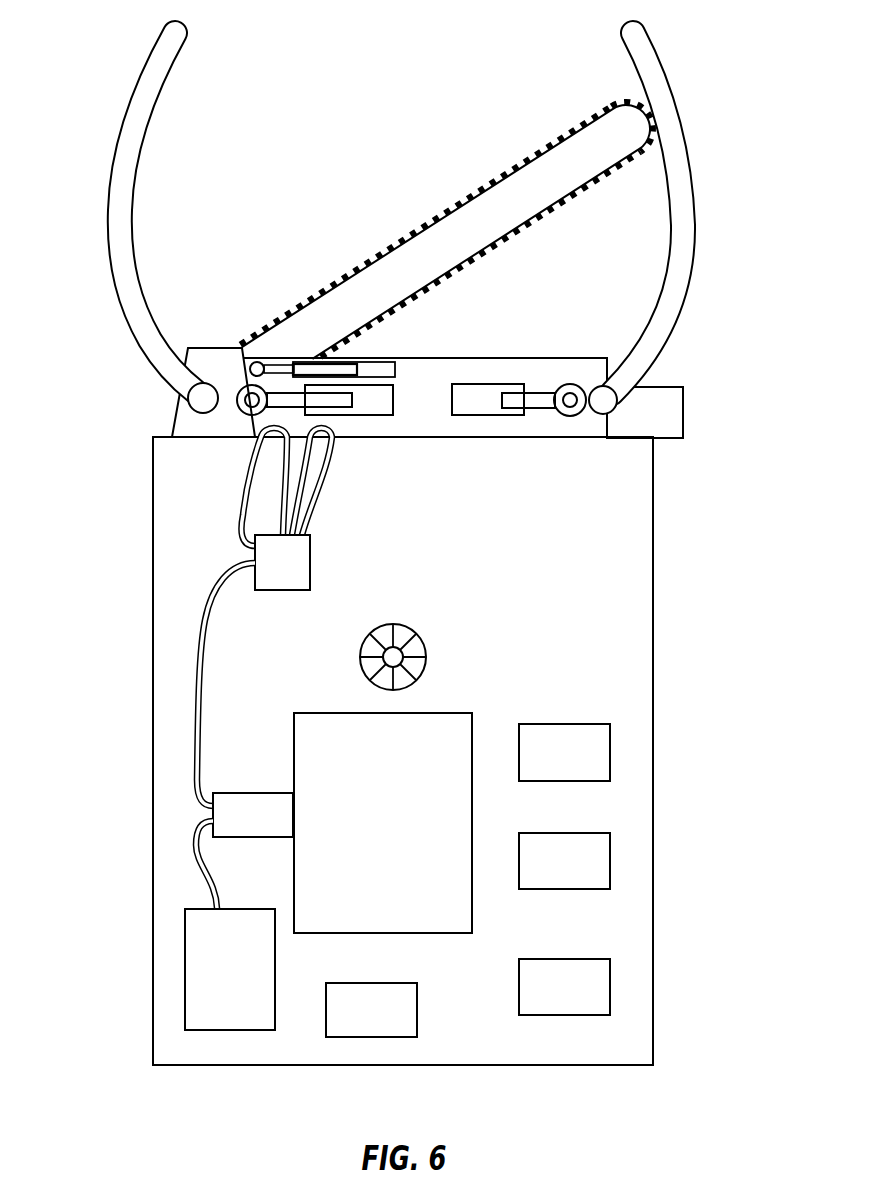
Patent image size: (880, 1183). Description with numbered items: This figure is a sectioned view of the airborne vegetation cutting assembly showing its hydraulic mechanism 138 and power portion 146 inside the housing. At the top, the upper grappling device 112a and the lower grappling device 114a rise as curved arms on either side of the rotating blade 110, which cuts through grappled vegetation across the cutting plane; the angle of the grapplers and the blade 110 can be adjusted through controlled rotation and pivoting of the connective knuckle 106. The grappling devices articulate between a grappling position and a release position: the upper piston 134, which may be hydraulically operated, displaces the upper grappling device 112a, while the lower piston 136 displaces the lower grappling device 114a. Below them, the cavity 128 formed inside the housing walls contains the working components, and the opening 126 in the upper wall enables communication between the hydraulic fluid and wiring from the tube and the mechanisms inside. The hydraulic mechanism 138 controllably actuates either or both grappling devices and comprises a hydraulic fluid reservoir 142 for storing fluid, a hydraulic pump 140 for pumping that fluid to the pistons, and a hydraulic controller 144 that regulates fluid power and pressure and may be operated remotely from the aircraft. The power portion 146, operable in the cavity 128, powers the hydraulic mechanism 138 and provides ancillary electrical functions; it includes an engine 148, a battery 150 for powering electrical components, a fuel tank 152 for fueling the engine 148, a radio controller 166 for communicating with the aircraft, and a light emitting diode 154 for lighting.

The connective knuckle 106 is at (405, 677).
The rotating blade 110 is at (502, 178).
The upper grappling device 112a is at (131, 88).
The lower grappling device 114a is at (673, 72).
The opening 126 is at (397, 652).
The cavity 128 is at (607, 479).
The upper piston 134 is at (528, 392).
The lower piston 136 is at (373, 360).
The hydraulic mechanism 138 is at (180, 1040).
The hydraulic pump 140 is at (273, 828).
The hydraulic fluid reservoir 142 is at (209, 982).
The hydraulic controller 144 is at (303, 575).
The power portion 146 is at (618, 713).
The engine 148 is at (362, 838).
The battery 150 is at (544, 766).
The fuel tank 152 is at (544, 1001).
The light emitting diode 154 is at (351, 1021).
The radio controller 166 is at (544, 875).